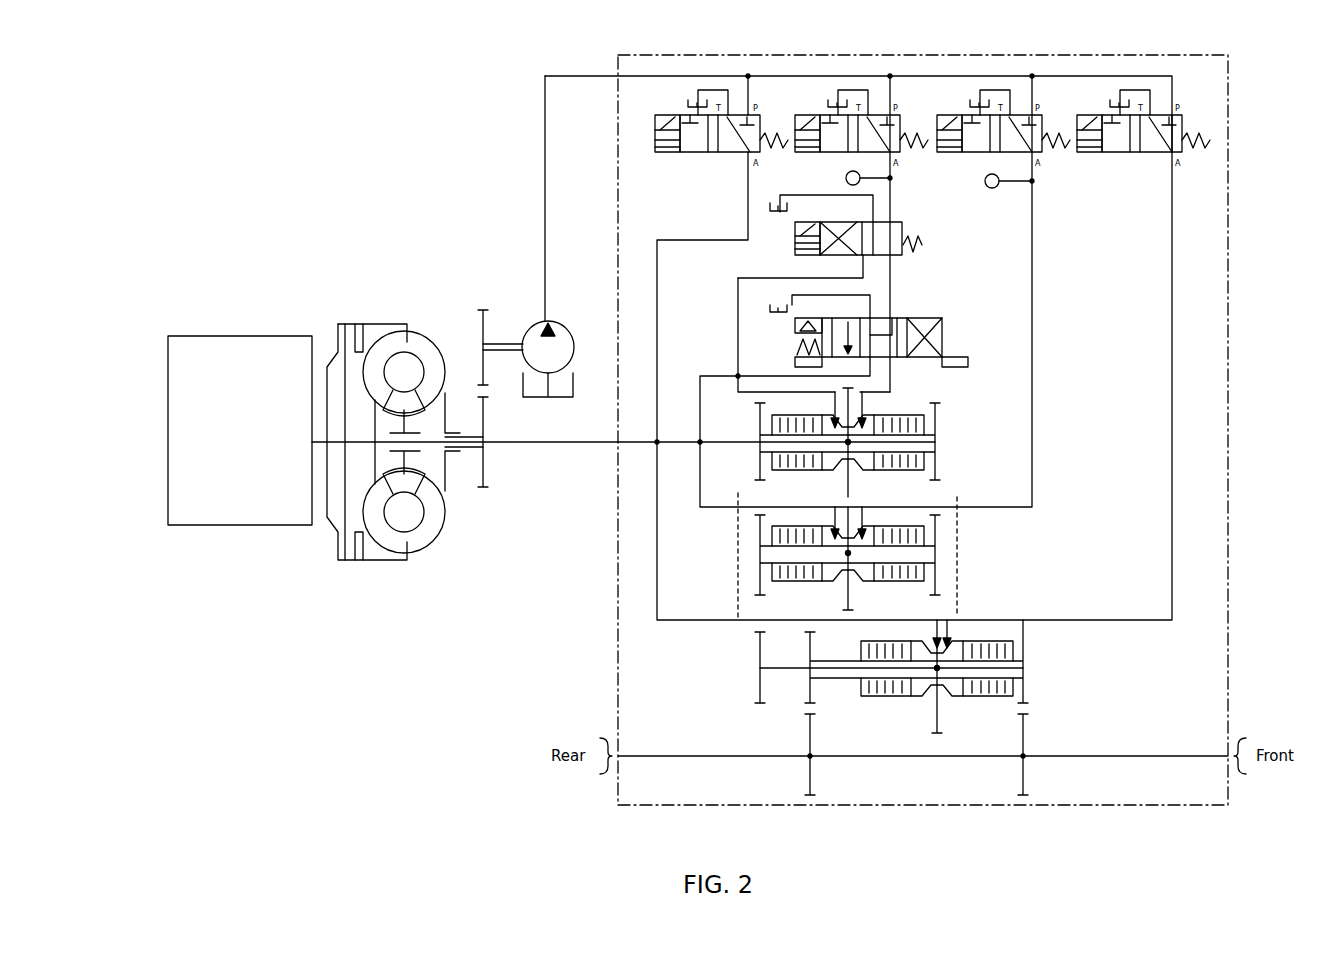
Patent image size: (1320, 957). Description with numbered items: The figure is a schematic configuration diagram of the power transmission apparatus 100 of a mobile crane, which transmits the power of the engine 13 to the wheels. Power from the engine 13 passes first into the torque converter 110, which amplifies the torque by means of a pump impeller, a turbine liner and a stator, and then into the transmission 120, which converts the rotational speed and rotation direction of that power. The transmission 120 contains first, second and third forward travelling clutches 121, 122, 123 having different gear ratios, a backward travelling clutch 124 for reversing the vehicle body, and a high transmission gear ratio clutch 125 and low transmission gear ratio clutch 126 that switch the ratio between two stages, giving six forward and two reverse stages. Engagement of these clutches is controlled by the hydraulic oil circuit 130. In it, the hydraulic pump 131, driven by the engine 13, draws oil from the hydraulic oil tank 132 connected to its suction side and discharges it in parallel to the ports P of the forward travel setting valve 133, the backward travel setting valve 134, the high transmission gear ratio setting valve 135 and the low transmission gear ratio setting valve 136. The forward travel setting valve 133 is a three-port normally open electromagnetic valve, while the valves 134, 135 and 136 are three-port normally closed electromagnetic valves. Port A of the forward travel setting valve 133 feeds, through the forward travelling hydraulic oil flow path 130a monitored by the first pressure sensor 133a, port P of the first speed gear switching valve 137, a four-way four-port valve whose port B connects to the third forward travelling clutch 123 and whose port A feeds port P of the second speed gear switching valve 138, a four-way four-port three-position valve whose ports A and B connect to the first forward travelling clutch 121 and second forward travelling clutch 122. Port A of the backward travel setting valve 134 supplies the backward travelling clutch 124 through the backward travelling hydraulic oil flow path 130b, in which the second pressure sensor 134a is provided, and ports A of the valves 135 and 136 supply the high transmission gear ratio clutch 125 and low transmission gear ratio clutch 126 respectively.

The engine 13 is at (238, 336).
The power transmission apparatus 100 is at (518, 152).
The torque converter 110 is at (396, 308).
The transmission 120 is at (612, 150).
The hydraulic oil circuit 130 is at (520, 228).
The forward travelling hydraulic oil flow path 130a is at (892, 203).
The backward travelling hydraulic oil flow path 130b is at (1034, 250).
The hydraulic pump 131 is at (530, 330).
The hydraulic oil tank 132 is at (575, 370).
The forward travel setting valve 133 is at (822, 157).
The first pressure sensor 133a is at (862, 183).
The backward travel setting valve 134 is at (965, 157).
The second pressure sensor 134a is at (993, 189).
The high transmission gear ratio setting valve 135 is at (1114, 157).
The low transmission gear ratio setting valve 136 is at (685, 157).
The first speed gear switching valve 137 is at (913, 252).
The second speed gear switching valve 138 is at (942, 343).
The first forward travelling clutch 121 is at (925, 482).
The second forward travelling clutch 122 is at (770, 594).
The third forward travelling clutch 123 is at (770, 480).
The backward travelling clutch 124 is at (925, 596).
The high transmission gear ratio clutch 125 is at (1018, 703).
The low transmission gear ratio clutch 126 is at (872, 702).